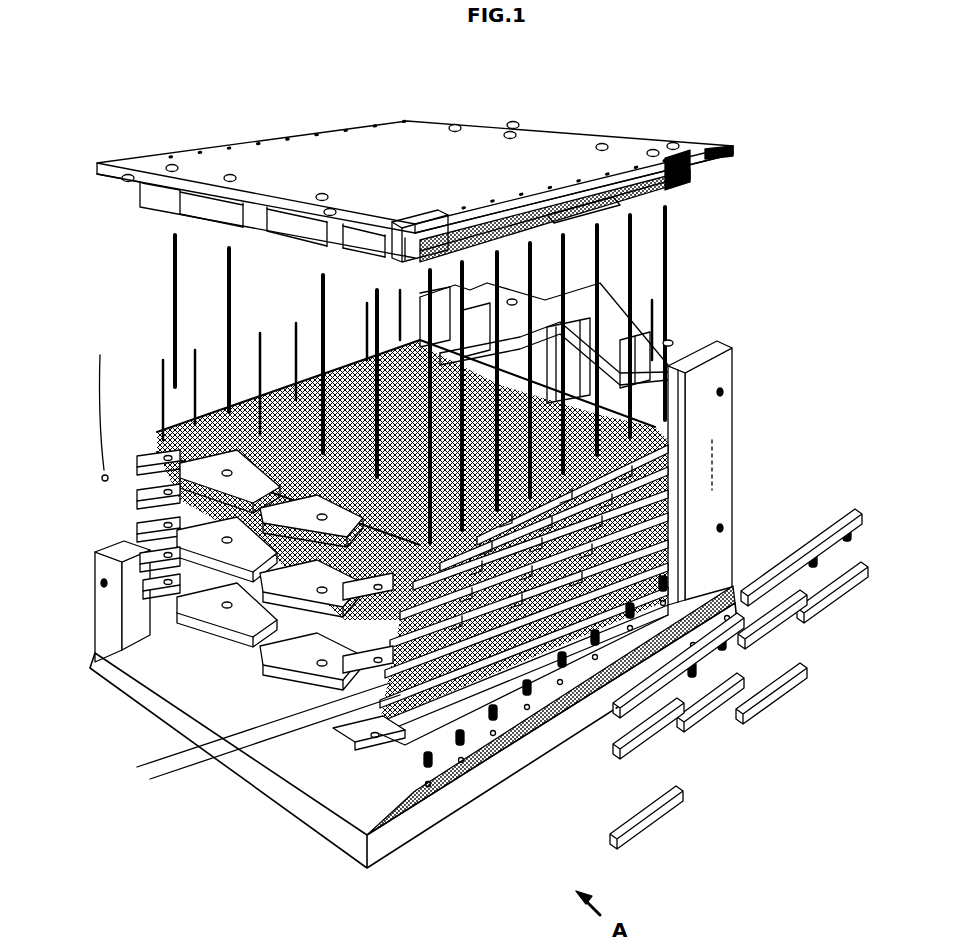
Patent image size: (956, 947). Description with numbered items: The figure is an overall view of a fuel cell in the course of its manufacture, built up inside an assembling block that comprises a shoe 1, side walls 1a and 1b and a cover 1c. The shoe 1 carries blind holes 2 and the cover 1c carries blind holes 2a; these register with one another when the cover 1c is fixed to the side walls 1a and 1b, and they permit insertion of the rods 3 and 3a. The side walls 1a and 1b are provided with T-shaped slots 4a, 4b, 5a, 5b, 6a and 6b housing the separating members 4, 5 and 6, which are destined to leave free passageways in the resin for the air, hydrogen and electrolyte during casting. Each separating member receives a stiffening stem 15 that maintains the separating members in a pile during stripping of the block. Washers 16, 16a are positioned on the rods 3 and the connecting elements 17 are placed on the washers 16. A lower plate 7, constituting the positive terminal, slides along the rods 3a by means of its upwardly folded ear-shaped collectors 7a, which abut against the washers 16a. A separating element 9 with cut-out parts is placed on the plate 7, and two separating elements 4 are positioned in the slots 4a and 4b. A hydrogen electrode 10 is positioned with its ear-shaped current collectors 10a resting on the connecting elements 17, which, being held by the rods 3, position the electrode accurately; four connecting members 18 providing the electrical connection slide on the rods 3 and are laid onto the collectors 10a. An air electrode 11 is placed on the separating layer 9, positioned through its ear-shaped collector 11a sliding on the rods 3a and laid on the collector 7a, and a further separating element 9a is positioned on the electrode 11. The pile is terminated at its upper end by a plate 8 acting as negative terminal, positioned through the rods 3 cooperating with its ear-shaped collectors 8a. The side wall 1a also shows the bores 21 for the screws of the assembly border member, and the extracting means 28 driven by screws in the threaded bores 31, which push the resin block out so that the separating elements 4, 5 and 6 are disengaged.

The shoe 1 is at (130, 675).
The side wall 1a is at (112, 625).
The side wall 1b is at (736, 374).
The cover 1c is at (716, 136).
The holes 2 is at (428, 787).
The holes 2a is at (368, 128).
The rods 3 is at (415, 258).
The rods 3a is at (668, 212).
The separating member 4 is at (380, 745).
The T-shaped slot 4a is at (360, 790).
The T-shaped slot 4b is at (510, 300).
The separating member 5 is at (132, 668).
The T-shaped slot 5a is at (168, 647).
The T-shaped slot 5b is at (670, 355).
The separating member 6 is at (300, 657).
The T-shaped slot 6a is at (347, 632).
The T-shaped slot 6b is at (600, 328).
The lower plate 7 is at (400, 760).
The ear-shaped collectors 7a is at (492, 722).
The plate 8 is at (560, 228).
The ear-shaped collectors 8a is at (600, 240).
The separating element 9 is at (400, 745).
The separating element 9a is at (378, 718).
The hydrogen electrode 10 is at (372, 760).
The ear-shaped current collectors 10a is at (385, 787).
The air electrode 11 is at (566, 668).
The ear-shaped collector 11a is at (557, 690).
The stiffening stem 15 is at (400, 285).
The washers 16 is at (461, 748).
The washers 16a is at (545, 690).
The connecting elements 17 is at (813, 545).
The connecting members 18 is at (800, 668).
The bores 21 is at (728, 393).
The extracting means 28 is at (165, 330).
The threaded bores 31 is at (100, 406).